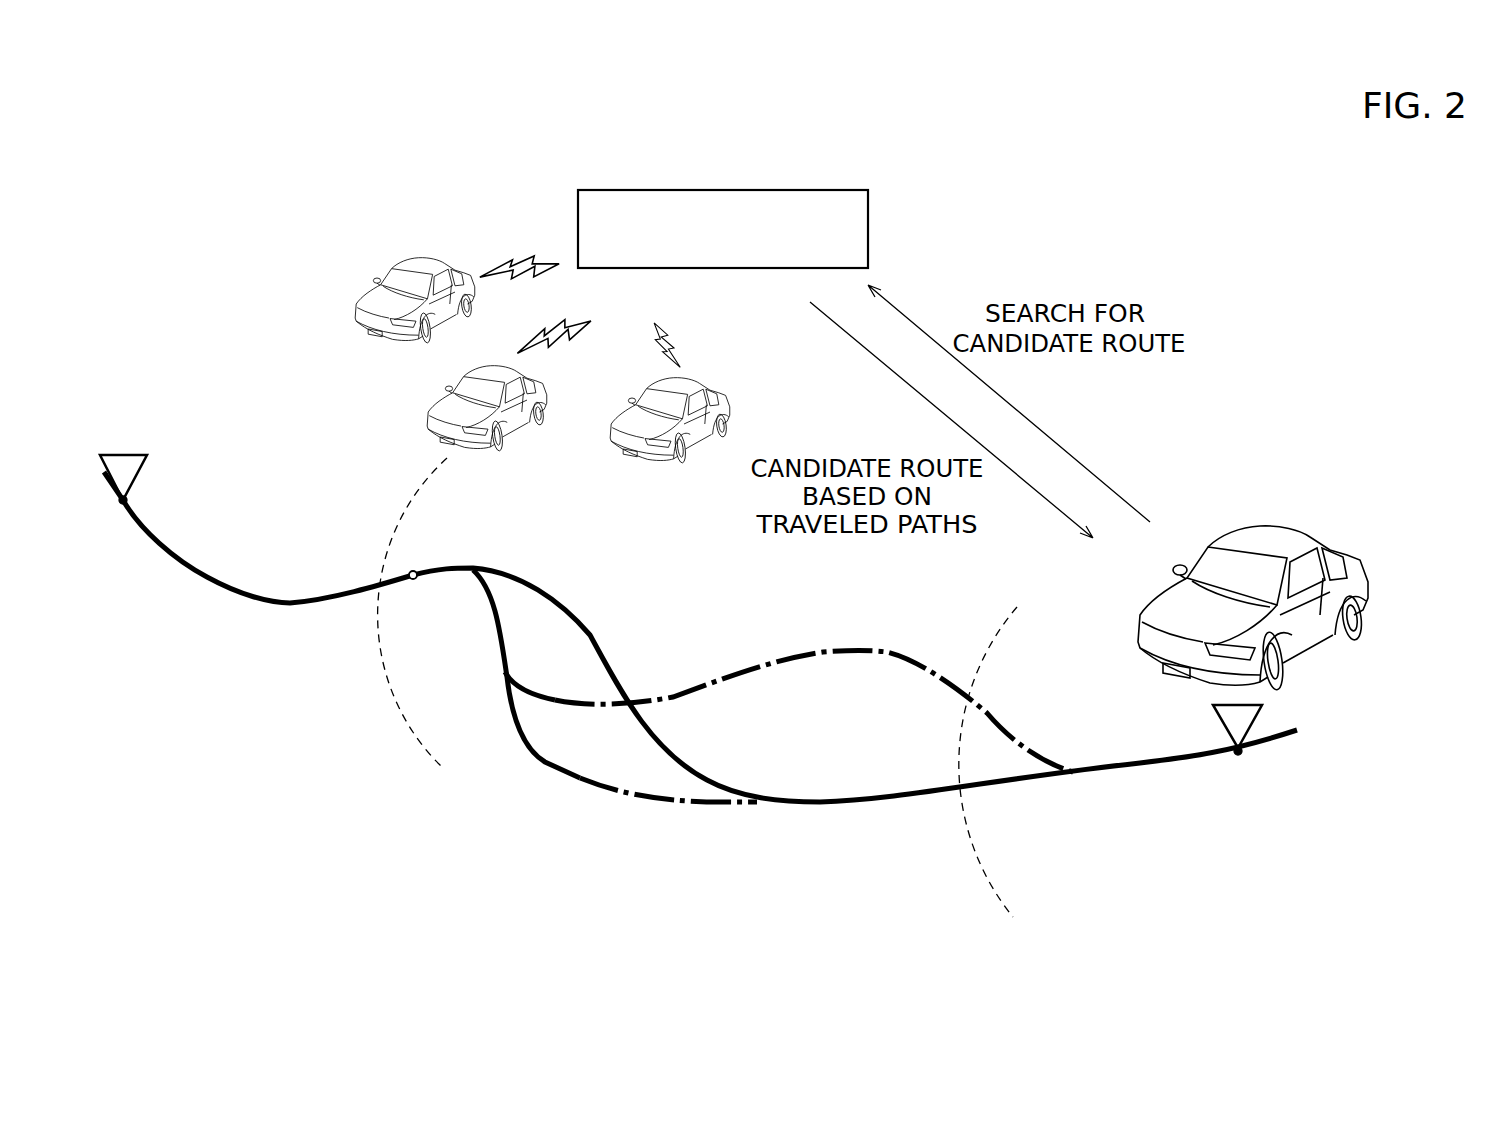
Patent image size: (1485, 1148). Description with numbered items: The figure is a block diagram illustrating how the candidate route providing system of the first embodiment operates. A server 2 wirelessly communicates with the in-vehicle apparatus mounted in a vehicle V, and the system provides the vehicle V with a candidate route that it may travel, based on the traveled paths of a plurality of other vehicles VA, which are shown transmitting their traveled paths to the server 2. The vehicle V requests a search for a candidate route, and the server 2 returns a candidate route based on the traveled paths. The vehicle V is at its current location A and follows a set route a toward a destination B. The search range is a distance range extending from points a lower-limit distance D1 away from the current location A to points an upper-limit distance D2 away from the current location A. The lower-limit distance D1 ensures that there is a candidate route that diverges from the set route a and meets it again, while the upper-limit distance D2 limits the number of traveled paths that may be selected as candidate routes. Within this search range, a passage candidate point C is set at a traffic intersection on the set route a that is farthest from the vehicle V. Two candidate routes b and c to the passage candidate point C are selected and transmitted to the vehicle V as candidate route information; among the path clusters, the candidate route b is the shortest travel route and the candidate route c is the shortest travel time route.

The server 2 is at (868, 226).
The other vehicles VA is at (355, 292).
The vehicle V is at (1283, 536).
The current location A is at (1238, 756).
The destination B is at (123, 504).
The passage candidate point C is at (413, 580).
The set route a is at (307, 606).
The candidate route b is at (640, 806).
The candidate route c is at (855, 650).
The lower-limit distance D1 is at (1009, 765).
The upper-limit distance D2 is at (415, 628).